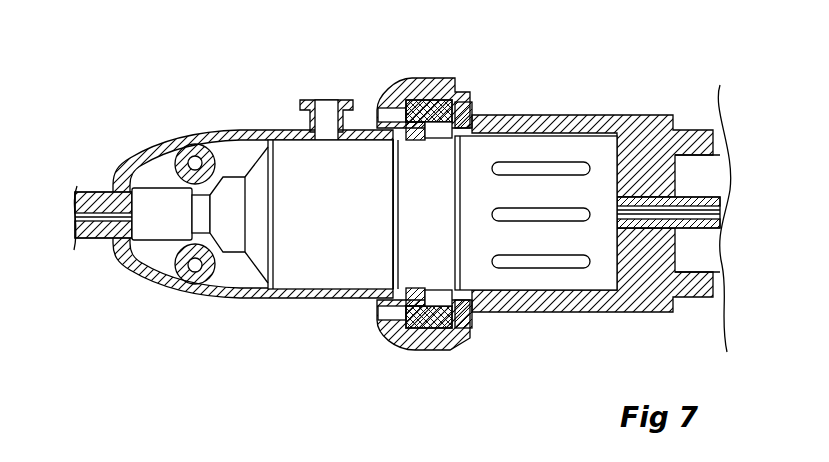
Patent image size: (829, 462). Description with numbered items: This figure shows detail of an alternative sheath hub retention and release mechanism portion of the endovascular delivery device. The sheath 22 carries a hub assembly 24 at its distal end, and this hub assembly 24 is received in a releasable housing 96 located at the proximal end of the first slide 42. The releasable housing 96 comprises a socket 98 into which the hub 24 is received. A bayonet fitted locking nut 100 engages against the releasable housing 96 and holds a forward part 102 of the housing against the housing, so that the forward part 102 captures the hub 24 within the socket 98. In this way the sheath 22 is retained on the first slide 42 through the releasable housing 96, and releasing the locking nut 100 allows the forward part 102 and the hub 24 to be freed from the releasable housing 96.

The sheath 22 is at (127, 243).
The forward part 102 is at (178, 278).
The hub assembly 24 is at (306, 235).
The bayonet fitted locking nut 100 is at (417, 340).
The releasable housing 96 is at (441, 356).
The socket 98 is at (546, 296).
The first slide 42 is at (641, 282).